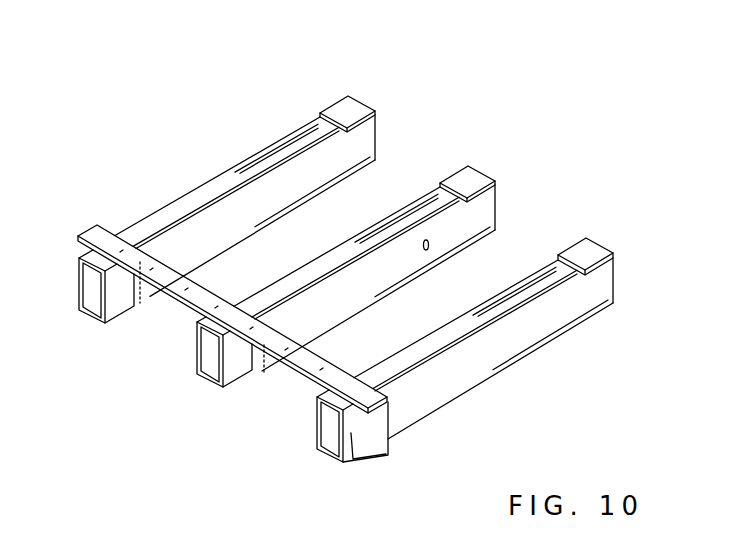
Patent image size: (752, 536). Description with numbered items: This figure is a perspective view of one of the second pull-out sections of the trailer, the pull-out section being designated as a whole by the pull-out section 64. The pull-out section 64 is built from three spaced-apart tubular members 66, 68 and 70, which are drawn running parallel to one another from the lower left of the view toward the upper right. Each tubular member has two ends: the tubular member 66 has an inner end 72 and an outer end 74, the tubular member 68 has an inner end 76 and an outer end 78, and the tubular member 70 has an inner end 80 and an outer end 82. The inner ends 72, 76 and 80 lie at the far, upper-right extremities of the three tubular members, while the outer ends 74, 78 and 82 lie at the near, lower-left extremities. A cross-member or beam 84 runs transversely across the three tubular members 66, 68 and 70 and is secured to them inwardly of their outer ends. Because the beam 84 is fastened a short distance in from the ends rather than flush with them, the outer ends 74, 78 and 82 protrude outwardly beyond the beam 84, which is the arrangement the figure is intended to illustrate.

The pull-out section 64 is at (402, 104).
The tubular member 66 is at (250, 152).
The tubular member 68 is at (350, 233).
The tubular member 70 is at (438, 332).
The inner end 72 is at (380, 131).
The outer end 74 is at (96, 316).
The inner end 76 is at (517, 187).
The outer end 78 is at (213, 387).
The inner end 80 is at (623, 272).
The outer end 82 is at (323, 453).
The cross-member or beam 84 is at (283, 407).